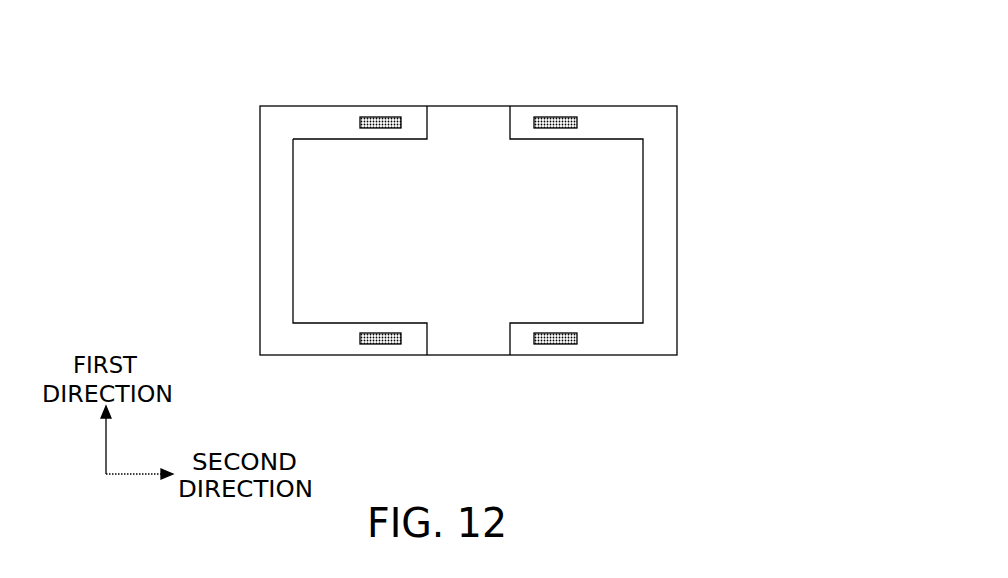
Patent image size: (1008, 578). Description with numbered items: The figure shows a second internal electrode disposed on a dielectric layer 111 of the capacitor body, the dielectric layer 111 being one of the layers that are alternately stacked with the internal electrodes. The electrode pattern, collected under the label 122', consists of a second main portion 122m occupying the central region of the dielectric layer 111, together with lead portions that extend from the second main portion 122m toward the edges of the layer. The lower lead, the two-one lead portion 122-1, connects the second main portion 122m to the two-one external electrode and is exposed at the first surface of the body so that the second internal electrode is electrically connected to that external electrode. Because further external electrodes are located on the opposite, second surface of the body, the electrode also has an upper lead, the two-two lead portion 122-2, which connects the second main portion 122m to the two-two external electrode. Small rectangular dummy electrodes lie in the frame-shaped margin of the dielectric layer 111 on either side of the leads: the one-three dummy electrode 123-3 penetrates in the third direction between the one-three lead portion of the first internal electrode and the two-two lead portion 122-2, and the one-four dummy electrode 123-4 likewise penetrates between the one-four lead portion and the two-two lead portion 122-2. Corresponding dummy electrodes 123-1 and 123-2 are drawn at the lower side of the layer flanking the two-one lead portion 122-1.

The dielectric layer 111 is at (665, 230).
The connecting portion 122' is at (809, 58).
The second main portion 122m is at (595, 193).
The 2-1 lead portion 122-1 is at (470, 345).
The 2-2 lead portion 122-2 is at (470, 113).
The first fixing member 123-1 is at (390, 344).
The second fixing member 123-2 is at (554, 344).
The 1-3 dummy electrode 123-3 is at (388, 117).
The 1-4 dummy electrode 123-4 is at (553, 117).